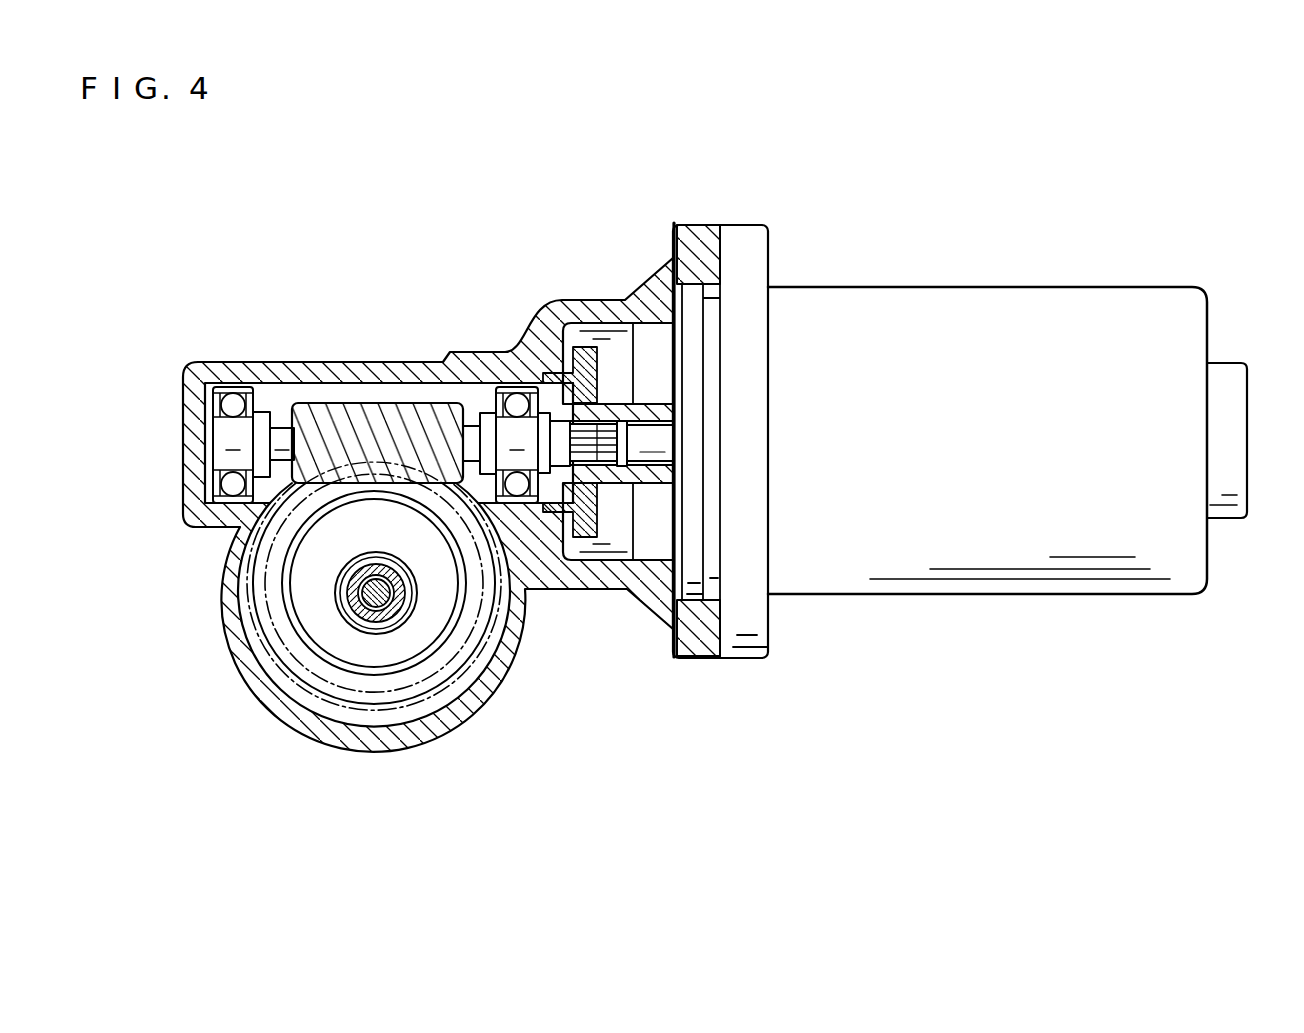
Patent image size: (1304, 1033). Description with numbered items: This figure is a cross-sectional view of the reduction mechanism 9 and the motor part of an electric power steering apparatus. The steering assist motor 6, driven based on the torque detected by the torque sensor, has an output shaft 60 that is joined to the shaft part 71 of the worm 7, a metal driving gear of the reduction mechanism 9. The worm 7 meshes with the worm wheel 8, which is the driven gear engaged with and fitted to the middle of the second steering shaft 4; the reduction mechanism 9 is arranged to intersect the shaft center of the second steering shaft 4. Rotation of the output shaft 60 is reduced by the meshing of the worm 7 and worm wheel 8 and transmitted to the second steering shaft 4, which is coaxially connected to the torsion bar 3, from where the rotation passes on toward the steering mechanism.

The torsion bar 3 is at (392, 621).
The second steering shaft 4 is at (362, 624).
The steering assist motor 6 is at (969, 286).
The worm 7 is at (356, 402).
The worm wheel 8 is at (247, 570).
The reduction mechanism 9 is at (400, 390).
The output shaft 60 is at (648, 428).
The shaft part 71 is at (542, 352).